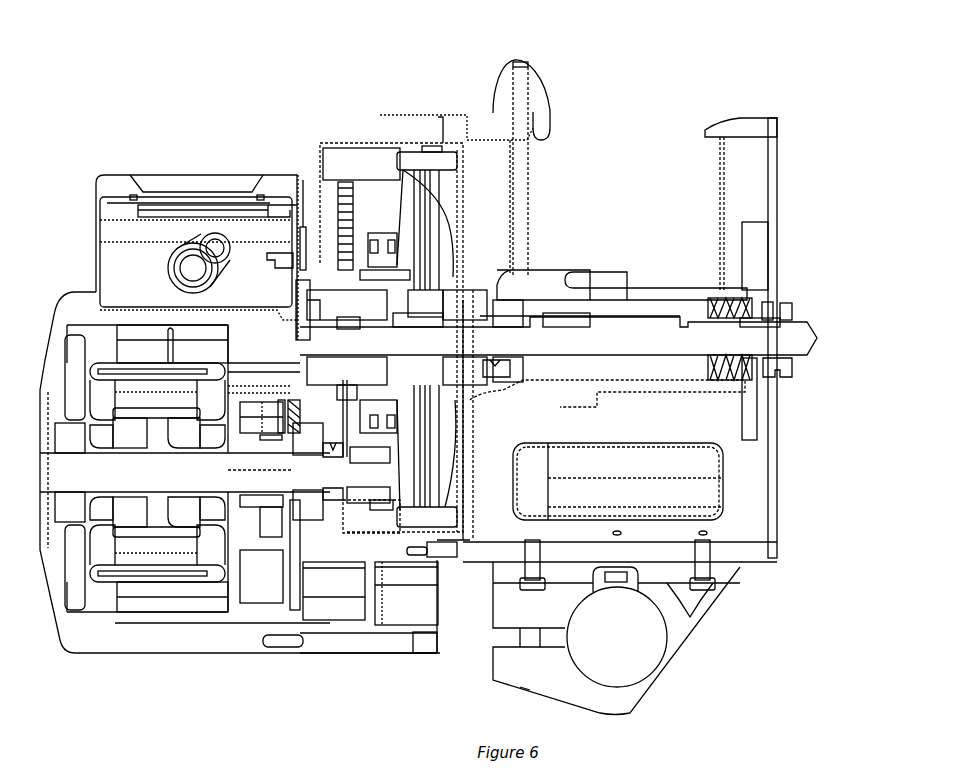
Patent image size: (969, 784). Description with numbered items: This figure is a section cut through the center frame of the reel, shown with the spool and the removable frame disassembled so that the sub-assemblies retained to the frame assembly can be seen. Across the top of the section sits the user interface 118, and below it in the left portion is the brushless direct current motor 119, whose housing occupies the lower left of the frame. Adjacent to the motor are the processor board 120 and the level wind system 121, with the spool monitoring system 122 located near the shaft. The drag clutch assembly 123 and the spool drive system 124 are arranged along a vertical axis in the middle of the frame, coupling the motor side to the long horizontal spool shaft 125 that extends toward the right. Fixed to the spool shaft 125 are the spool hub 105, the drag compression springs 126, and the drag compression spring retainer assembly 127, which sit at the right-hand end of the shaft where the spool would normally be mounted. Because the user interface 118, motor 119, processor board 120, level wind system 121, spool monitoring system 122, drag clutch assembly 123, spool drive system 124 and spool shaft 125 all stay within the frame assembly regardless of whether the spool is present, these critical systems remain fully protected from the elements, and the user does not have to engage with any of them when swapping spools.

The spool hub 105 is at (662, 299).
The user interface 118 is at (190, 196).
The brushless direct current motor 119 is at (100, 388).
The processor board 120 is at (299, 236).
The level wind system 121 is at (354, 241).
The spool monitoring system 122 is at (318, 343).
The drag clutch assembly 123 is at (455, 268).
The spool drive system 124 is at (415, 392).
The spool shaft 125 is at (574, 338).
The drag compression springs 126 is at (735, 305).
The drag compression spring retainer assembly 127 is at (789, 305).